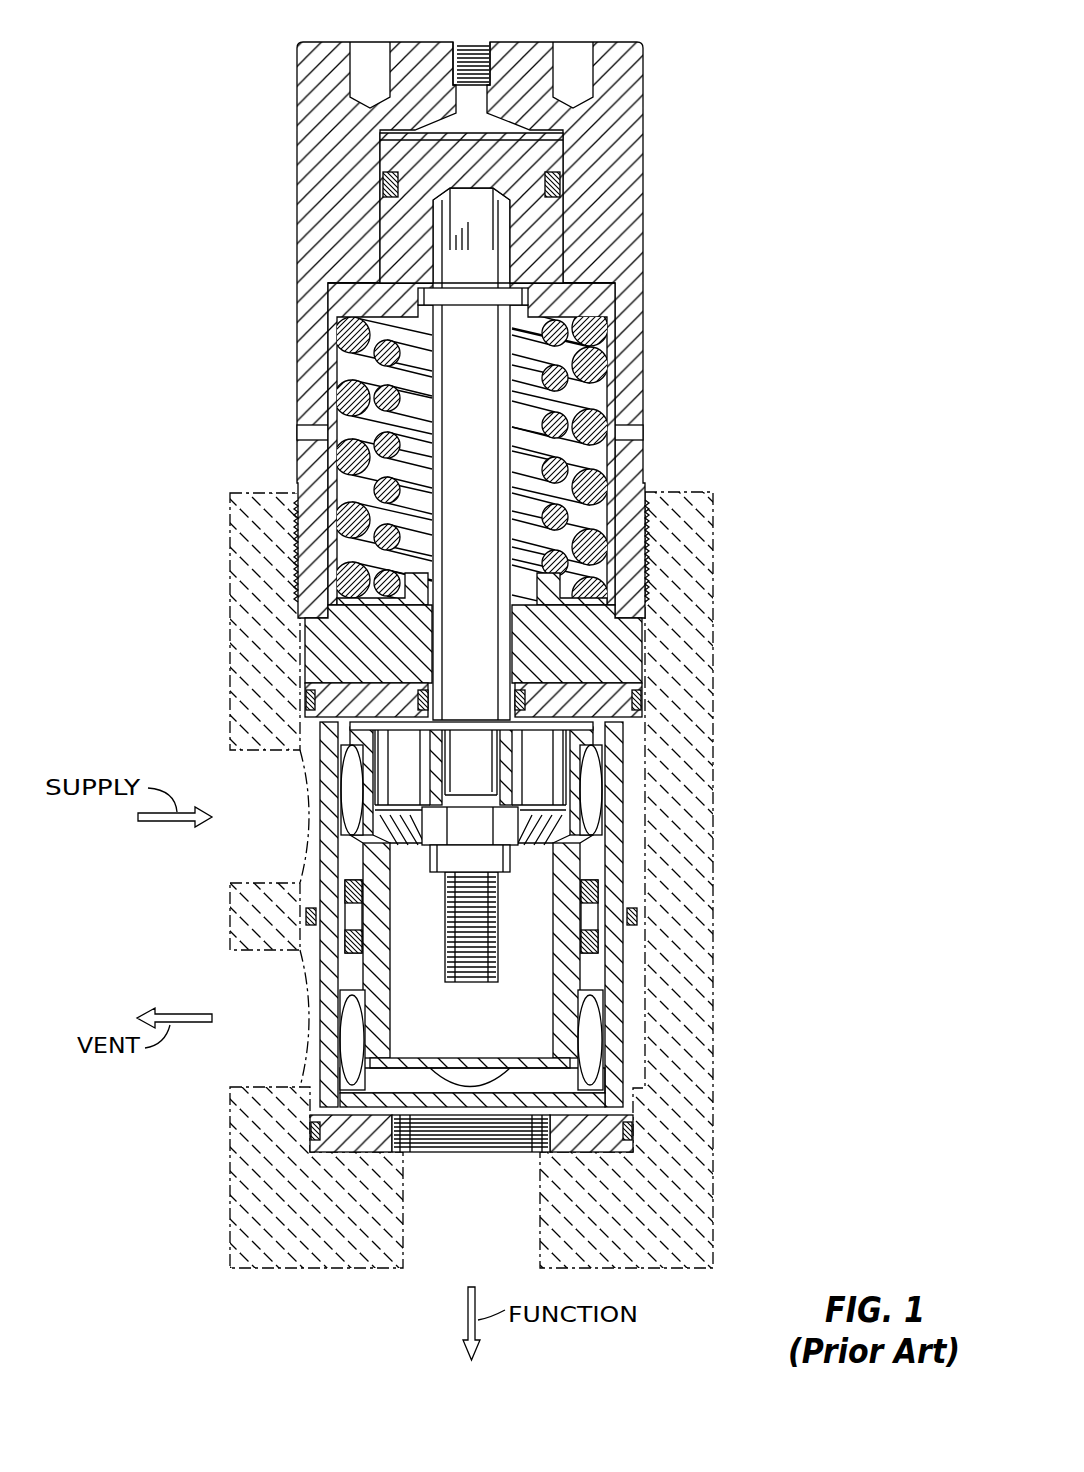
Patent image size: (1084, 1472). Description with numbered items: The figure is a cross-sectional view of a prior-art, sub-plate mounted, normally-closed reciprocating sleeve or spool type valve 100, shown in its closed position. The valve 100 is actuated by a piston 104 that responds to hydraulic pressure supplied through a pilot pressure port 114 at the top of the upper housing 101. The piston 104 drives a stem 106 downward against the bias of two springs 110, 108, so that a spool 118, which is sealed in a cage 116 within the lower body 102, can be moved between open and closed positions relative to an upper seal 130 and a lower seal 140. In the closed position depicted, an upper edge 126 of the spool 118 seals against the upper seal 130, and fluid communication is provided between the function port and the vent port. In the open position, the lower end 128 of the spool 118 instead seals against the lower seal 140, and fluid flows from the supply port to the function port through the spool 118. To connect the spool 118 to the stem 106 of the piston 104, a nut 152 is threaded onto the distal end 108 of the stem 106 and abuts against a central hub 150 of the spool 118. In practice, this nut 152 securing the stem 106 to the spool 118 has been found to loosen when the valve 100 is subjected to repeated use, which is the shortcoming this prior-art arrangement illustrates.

The valve 100 is at (505, 635).
The upper housing (bonnet) 101 is at (310, 121).
The valve body 102 is at (712, 547).
The piston 104 is at (560, 232).
The stem 106 is at (515, 455).
The spring / distal end of the stem 108 is at (505, 637).
The spring 110 is at (410, 387).
The pilot pressure port 114 is at (475, 42).
The cage 116 is at (640, 858).
The spool 118 is at (570, 962).
The upper edge of the spool 126 is at (600, 720).
The lower end of the spool 128 is at (600, 1085).
The upper seal 130 is at (640, 660).
The lower seal 140 is at (598, 1152).
The central hub of the spool 150 is at (590, 788).
The nut 152 is at (605, 825).